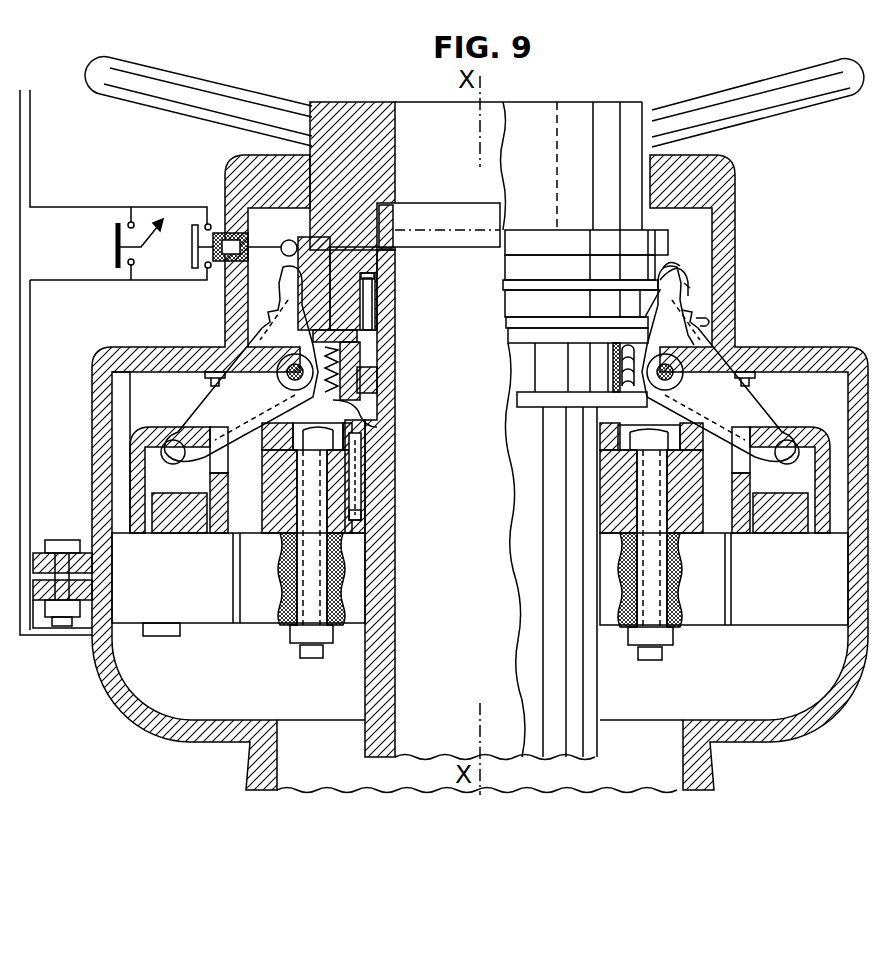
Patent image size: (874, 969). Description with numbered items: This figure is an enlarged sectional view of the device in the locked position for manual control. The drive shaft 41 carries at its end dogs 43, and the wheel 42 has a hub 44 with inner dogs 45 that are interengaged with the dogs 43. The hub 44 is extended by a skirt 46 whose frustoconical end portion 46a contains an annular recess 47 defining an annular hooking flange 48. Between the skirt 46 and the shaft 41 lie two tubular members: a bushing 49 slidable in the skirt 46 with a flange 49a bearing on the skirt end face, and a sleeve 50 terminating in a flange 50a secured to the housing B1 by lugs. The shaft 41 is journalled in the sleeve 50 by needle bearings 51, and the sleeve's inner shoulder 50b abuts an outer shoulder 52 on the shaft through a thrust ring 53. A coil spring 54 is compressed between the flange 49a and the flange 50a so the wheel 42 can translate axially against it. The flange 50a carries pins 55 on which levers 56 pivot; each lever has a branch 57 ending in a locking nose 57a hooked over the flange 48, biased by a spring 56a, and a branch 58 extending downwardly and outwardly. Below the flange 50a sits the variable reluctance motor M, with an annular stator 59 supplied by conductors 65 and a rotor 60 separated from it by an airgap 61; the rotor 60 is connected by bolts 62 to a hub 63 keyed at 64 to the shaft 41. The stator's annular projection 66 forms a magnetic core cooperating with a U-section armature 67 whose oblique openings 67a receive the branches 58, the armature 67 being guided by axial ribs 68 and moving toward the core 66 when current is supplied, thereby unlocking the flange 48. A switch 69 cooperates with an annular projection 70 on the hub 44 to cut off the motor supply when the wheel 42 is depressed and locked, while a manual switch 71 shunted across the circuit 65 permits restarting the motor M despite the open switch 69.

The drive shaft 41 is at (385, 675).
The wheel 42 is at (735, 108).
The dogs 43 is at (393, 238).
The hub 44 is at (372, 106).
The inner dogs 45 is at (392, 243).
The skirt 46 is at (613, 243).
The frustoconical end portion 46a is at (285, 297).
The annular recess 47 is at (662, 262).
The annular hooking flange 48 is at (686, 284).
The bushing 49 is at (325, 250).
The flange of the bushing 49a is at (348, 337).
The sleeve 50 is at (352, 262).
The flange of the sleeve 50a is at (357, 435).
The inner shoulder 50b is at (345, 375).
The needle bearings 51 is at (366, 305).
The outer shoulder 52 is at (362, 412).
The thrust ring 53 is at (358, 393).
The coil spring 54 is at (625, 366).
The pins 55 is at (674, 381).
The levers 56 is at (702, 343).
The spring 56a is at (707, 320).
The branch 57 is at (690, 296).
The locking nose 57a is at (672, 263).
The branch 58 is at (740, 410).
The stator 59 is at (795, 608).
The rotor 60 is at (697, 605).
The airgap 61 is at (727, 610).
The bolts 62 is at (295, 582).
The hub 63 is at (360, 512).
The key 64 is at (358, 490).
The conductors 65 is at (41, 650).
The annular projection 66 is at (182, 520).
The magnetic armature 67 is at (138, 500).
The oblique openings 67a is at (200, 432).
The axial ribs 68 is at (118, 402).
The switch 69 is at (222, 220).
The annular projection 70 is at (267, 243).
The manual switch 71 is at (116, 237).
The housing B1 is at (100, 420).
The variable reluctance motor M is at (229, 630).